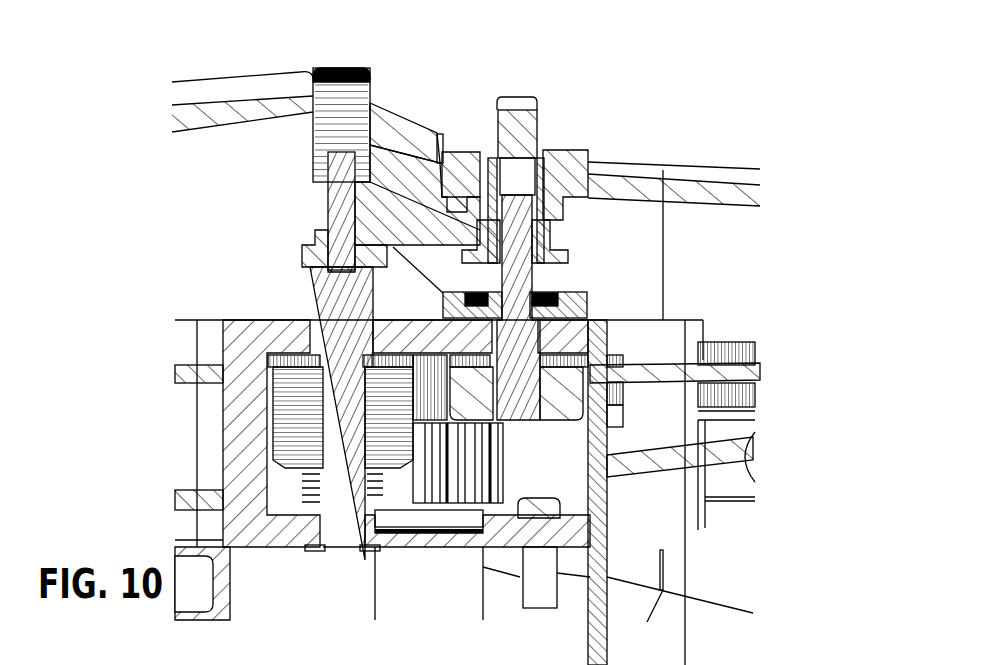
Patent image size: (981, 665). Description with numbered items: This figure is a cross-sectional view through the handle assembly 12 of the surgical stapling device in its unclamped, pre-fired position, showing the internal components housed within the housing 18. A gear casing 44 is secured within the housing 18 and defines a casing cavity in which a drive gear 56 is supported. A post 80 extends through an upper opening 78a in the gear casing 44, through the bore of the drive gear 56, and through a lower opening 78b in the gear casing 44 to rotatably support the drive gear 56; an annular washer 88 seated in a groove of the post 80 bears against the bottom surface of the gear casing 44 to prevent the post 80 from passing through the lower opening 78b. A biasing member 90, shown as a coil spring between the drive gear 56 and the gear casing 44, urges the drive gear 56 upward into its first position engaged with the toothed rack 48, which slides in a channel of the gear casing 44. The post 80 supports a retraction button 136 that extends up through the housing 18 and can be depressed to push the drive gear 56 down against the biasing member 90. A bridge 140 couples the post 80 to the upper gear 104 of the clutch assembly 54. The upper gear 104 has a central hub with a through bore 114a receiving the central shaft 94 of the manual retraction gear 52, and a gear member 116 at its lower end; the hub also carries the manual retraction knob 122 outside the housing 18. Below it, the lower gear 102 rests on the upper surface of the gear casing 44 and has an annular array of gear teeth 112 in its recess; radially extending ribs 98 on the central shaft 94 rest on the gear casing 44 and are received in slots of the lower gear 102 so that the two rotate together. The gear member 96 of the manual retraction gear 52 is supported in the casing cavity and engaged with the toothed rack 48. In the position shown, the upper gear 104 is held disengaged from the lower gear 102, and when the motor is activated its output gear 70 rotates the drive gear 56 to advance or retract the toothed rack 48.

The handle assembly 12 is at (205, 78).
The retraction button 136 is at (330, 88).
The bridge 140 is at (395, 174).
The upper gear 104 is at (547, 173).
The gear member 116 is at (587, 243).
The manual retraction knob 122 is at (537, 98).
The through bore 114a is at (522, 173).
The central shaft 94 is at (510, 232).
The housing 18 is at (678, 192).
The clutch assembly 54 is at (588, 259).
The gear teeth 112 is at (565, 290).
The lower gear 102 is at (587, 302).
The gear casing 44 is at (603, 331).
The drive gear 56 is at (265, 437).
The upper opening 78a is at (303, 331).
The post 80 is at (330, 400).
The biasing member 90 is at (315, 505).
The annular washer 88 is at (312, 551).
The lower opening 78b is at (377, 530).
The radially extending ribs 98 is at (403, 497).
The output gear 70 is at (470, 330).
The manual retraction gear 52 is at (566, 425).
The toothed rack 48 is at (733, 350).
The gear member 96 is at (572, 400).